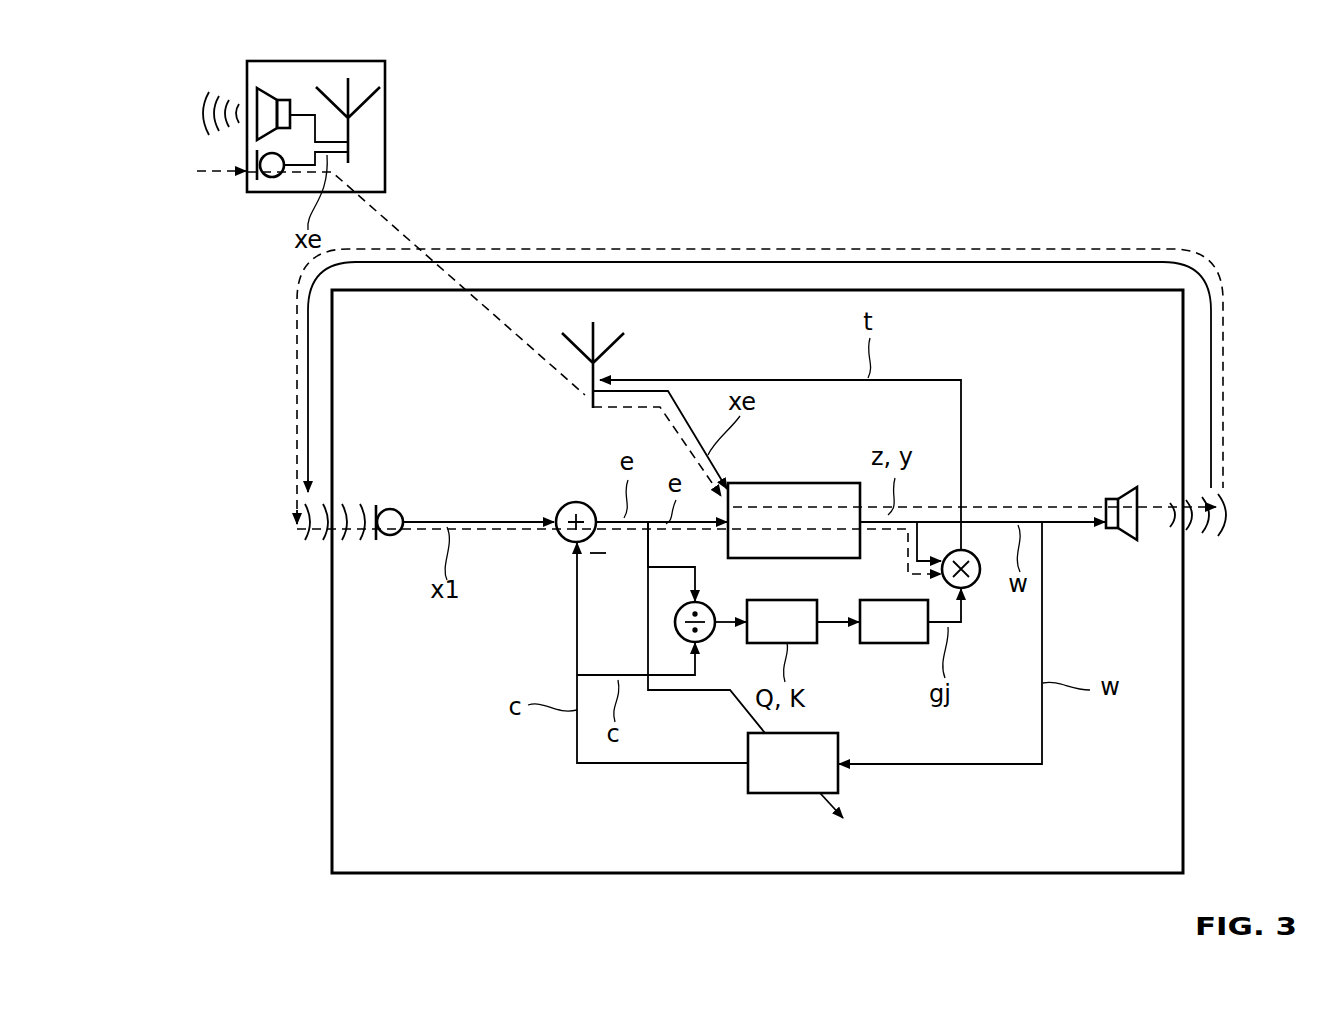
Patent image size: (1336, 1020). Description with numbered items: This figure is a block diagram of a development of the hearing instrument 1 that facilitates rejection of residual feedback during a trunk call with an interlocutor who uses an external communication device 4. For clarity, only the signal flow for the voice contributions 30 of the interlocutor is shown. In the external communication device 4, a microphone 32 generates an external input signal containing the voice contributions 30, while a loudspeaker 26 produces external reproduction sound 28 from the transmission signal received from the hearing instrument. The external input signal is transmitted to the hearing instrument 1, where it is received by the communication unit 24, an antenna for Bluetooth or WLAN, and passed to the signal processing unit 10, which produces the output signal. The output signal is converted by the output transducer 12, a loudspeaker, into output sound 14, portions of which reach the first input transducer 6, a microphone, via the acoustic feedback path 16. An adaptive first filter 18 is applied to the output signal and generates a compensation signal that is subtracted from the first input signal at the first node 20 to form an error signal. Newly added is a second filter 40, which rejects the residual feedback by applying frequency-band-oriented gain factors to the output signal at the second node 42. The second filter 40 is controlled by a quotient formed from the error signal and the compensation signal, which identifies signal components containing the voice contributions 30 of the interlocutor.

The hearing instrument 1 is at (289, 795).
The external communication device 4 is at (385, 70).
The first input transducer 6 is at (392, 508).
The signal processing unit 10 is at (797, 500).
The output transducer 12 is at (1124, 490).
The output sound 14 is at (1206, 550).
The acoustic feedback path 16 is at (957, 262).
The first filter 18 is at (780, 775).
The first node 20 is at (556, 508).
The communication unit 24 is at (584, 401).
The loudspeaker 26 is at (272, 88).
The external reproduction sound 28 is at (196, 114).
The voice contributions of the interlocutor 30 is at (212, 180).
The microphone 32 is at (272, 178).
The second filter 40 is at (898, 645).
The second node 42 is at (968, 550).